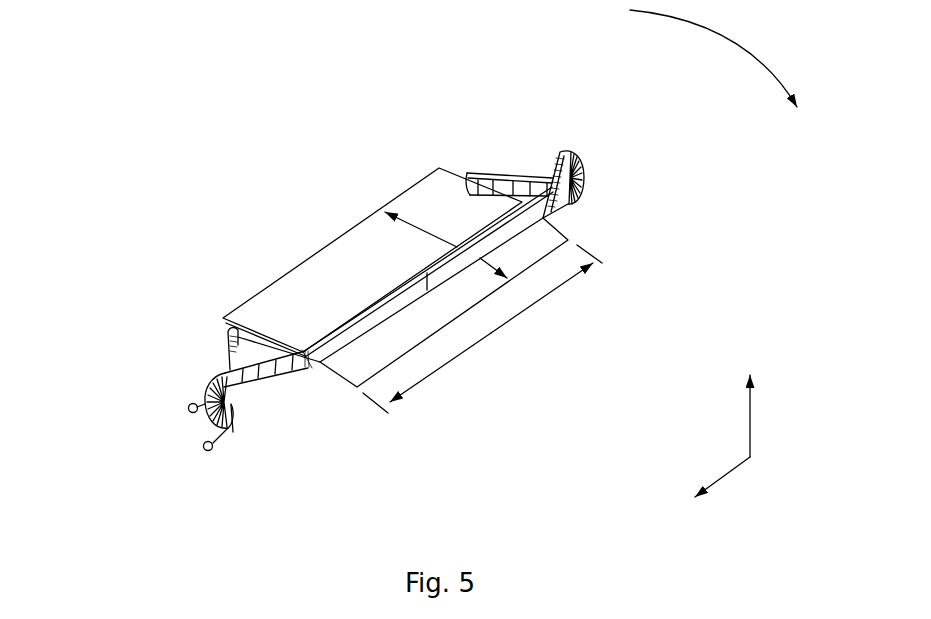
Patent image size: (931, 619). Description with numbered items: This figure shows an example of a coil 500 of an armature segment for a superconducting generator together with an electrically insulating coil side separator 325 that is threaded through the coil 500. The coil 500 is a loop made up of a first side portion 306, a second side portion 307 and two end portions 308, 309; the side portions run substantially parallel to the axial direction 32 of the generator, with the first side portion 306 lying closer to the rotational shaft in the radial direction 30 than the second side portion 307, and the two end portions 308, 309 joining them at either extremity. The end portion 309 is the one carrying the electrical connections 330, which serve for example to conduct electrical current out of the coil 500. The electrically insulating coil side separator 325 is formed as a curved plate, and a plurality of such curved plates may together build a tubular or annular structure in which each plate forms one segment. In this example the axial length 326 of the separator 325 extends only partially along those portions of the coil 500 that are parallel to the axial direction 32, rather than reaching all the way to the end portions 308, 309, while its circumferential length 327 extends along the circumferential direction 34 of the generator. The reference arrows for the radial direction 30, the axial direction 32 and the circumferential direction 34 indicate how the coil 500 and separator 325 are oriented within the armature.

The coil 500 is at (561, 135).
The circumferential length 327 is at (413, 222).
The electrically insulating coil side separator 325 is at (540, 233).
The second side portion 307 is at (341, 345).
The axial length 326 is at (510, 323).
The end portion 308 is at (580, 159).
The first side portion 306 is at (223, 322).
The end portion 309 is at (233, 425).
The electrical connections 330 is at (188, 408).
The circumferential direction 34 is at (713, 58).
The radial direction 30 is at (771, 416).
The axial direction 32 is at (722, 495).